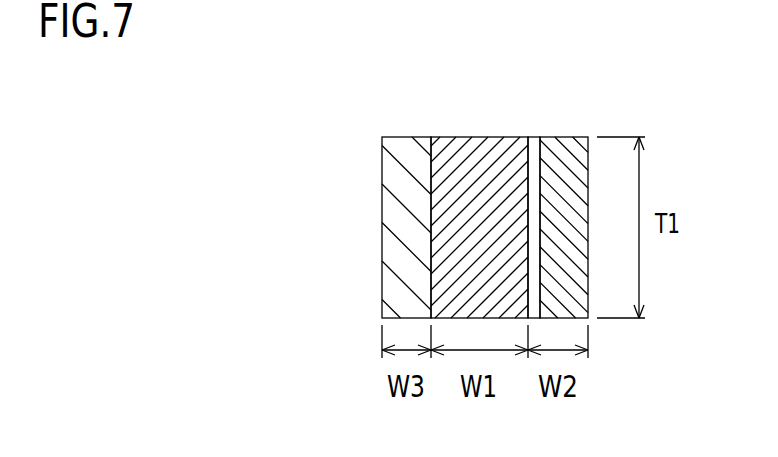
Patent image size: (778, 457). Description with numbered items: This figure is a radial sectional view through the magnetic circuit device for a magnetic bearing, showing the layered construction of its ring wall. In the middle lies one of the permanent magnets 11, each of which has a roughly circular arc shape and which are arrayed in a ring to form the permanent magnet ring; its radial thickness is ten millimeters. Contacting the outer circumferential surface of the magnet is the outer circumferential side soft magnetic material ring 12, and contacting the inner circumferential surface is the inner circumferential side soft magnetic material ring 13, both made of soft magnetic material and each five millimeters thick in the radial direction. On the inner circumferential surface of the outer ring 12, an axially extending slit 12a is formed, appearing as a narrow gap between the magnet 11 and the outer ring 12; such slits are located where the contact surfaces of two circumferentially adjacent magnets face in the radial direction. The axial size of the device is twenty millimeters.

The permanent magnet 11 is at (481, 144).
The outer circumferential side soft magnetic material ring 12 is at (578, 203).
The slit 12a is at (534, 142).
The inner circumferential side soft magnetic material ring 13 is at (397, 220).